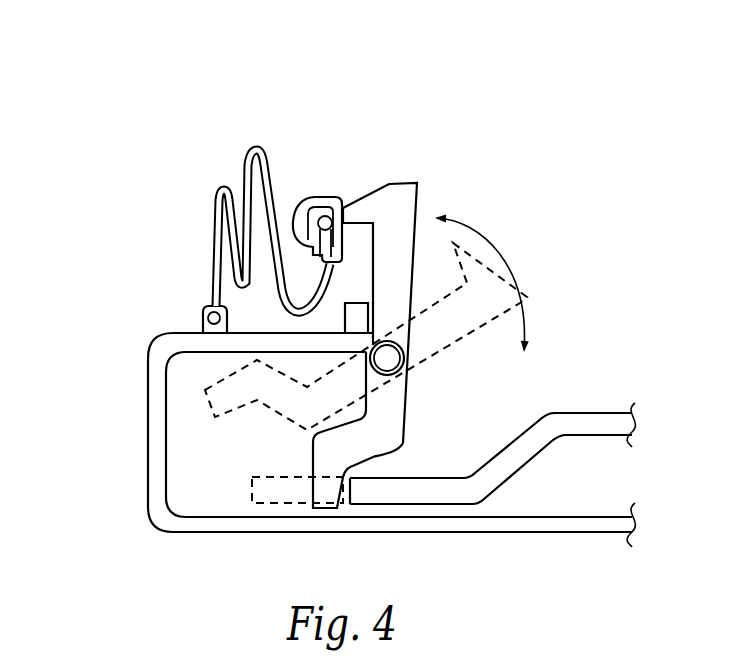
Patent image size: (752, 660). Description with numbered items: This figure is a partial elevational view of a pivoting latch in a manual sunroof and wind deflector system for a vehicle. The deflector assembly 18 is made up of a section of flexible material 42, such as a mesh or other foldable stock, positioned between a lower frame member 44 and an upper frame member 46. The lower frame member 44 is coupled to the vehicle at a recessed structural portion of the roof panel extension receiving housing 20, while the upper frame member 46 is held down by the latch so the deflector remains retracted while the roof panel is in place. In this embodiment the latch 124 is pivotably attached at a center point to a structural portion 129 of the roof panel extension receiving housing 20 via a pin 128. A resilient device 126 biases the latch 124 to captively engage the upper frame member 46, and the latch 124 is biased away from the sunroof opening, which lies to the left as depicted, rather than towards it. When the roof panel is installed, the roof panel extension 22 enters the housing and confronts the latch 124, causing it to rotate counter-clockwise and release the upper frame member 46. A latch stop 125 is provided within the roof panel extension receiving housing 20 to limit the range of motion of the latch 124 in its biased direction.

The deflector assembly 18 is at (77, 111).
The roof panel extension receiving housing 20 is at (413, 523).
The roof panel extension 22 is at (522, 467).
The flexible material 42 is at (244, 185).
The lower frame member 44 is at (203, 320).
The upper frame member 46 is at (330, 198).
The latch 124 is at (410, 213).
The latch stop 125 is at (345, 320).
The resilient device 126 is at (412, 340).
The pin 128 is at (388, 377).
The structural portion 129 is at (146, 437).